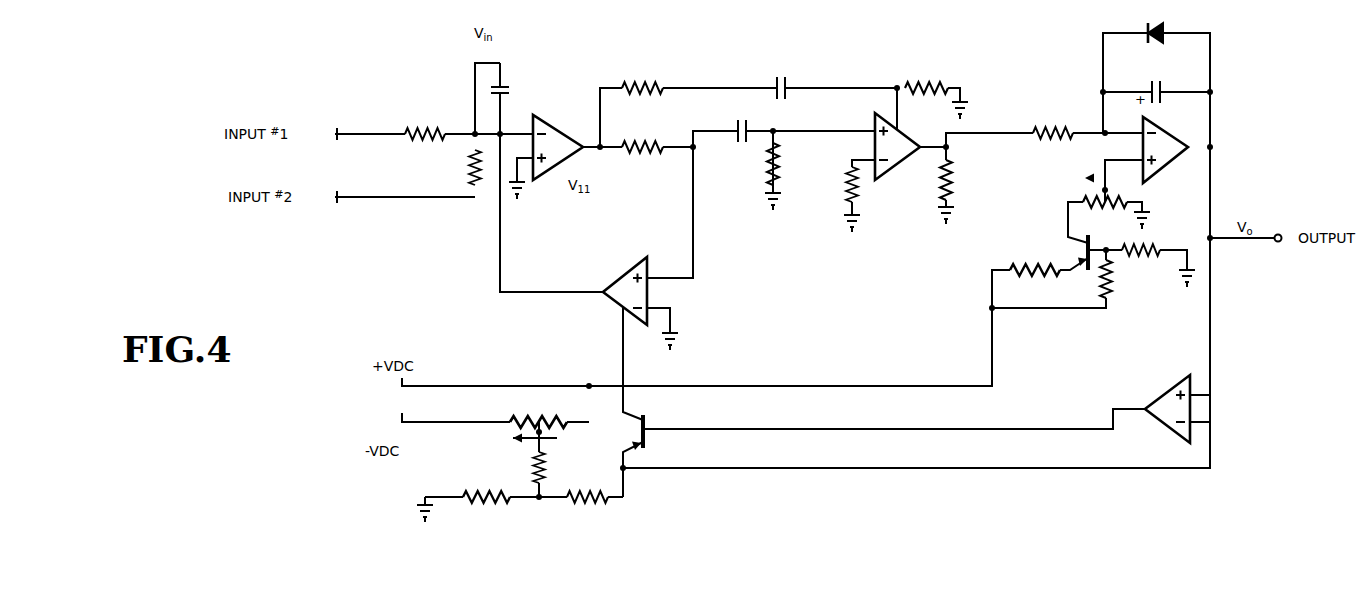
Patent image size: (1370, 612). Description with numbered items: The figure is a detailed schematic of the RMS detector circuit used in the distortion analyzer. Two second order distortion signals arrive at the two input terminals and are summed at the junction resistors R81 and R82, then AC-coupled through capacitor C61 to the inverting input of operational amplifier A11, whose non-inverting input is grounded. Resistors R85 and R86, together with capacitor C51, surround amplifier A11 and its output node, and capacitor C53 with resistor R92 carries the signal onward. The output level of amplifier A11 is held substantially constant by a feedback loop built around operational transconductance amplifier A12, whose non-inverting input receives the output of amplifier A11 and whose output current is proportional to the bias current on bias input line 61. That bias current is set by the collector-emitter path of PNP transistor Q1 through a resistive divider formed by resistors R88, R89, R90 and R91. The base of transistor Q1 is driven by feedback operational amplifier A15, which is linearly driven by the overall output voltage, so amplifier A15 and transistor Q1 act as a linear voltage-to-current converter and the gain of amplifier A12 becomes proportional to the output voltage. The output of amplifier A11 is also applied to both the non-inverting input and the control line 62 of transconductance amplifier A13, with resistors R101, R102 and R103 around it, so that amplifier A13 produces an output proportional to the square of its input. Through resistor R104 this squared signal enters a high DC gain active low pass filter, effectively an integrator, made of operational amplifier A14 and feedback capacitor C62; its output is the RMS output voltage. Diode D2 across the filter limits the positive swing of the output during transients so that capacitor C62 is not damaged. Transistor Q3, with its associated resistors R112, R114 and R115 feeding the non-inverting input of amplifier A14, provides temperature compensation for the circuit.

The junction resistor R81 is at (445, 128).
The junction resistor R82 is at (472, 166).
The capacitor C61 is at (514, 90).
The input operational amplifier A11 is at (568, 116).
The resistor R85 is at (634, 80).
The resistor R86 is at (656, 152).
The capacitor C53 is at (741, 118).
The capacitor C51 is at (790, 78).
The resistor R101 is at (926, 80).
The control line 62 is at (898, 114).
The resistor R92 is at (766, 165).
The resistor R102 is at (845, 182).
The operational transconductance amplifier A13 is at (900, 166).
The resistor R103 is at (956, 190).
The resistor R104 is at (1032, 128).
The feedback capacitor C62 is at (1153, 86).
The diode D2 is at (1162, 43).
The operational amplifier A14 is at (1170, 138).
The resistor R112 is at (1090, 214).
The resistor R115 is at (1152, 246).
The resistor R114 is at (1115, 284).
The transistor Q3 is at (1056, 254).
The feedback operational amplifier A15 is at (1163, 400).
The operational transconductance amplifier A12 is at (614, 282).
The bias input line 61 is at (622, 332).
The resistor R88 is at (533, 416).
The resistor R89 is at (547, 468).
The resistor R90 is at (490, 504).
The resistor R91 is at (592, 504).
The PNP transistor Q1 is at (664, 416).